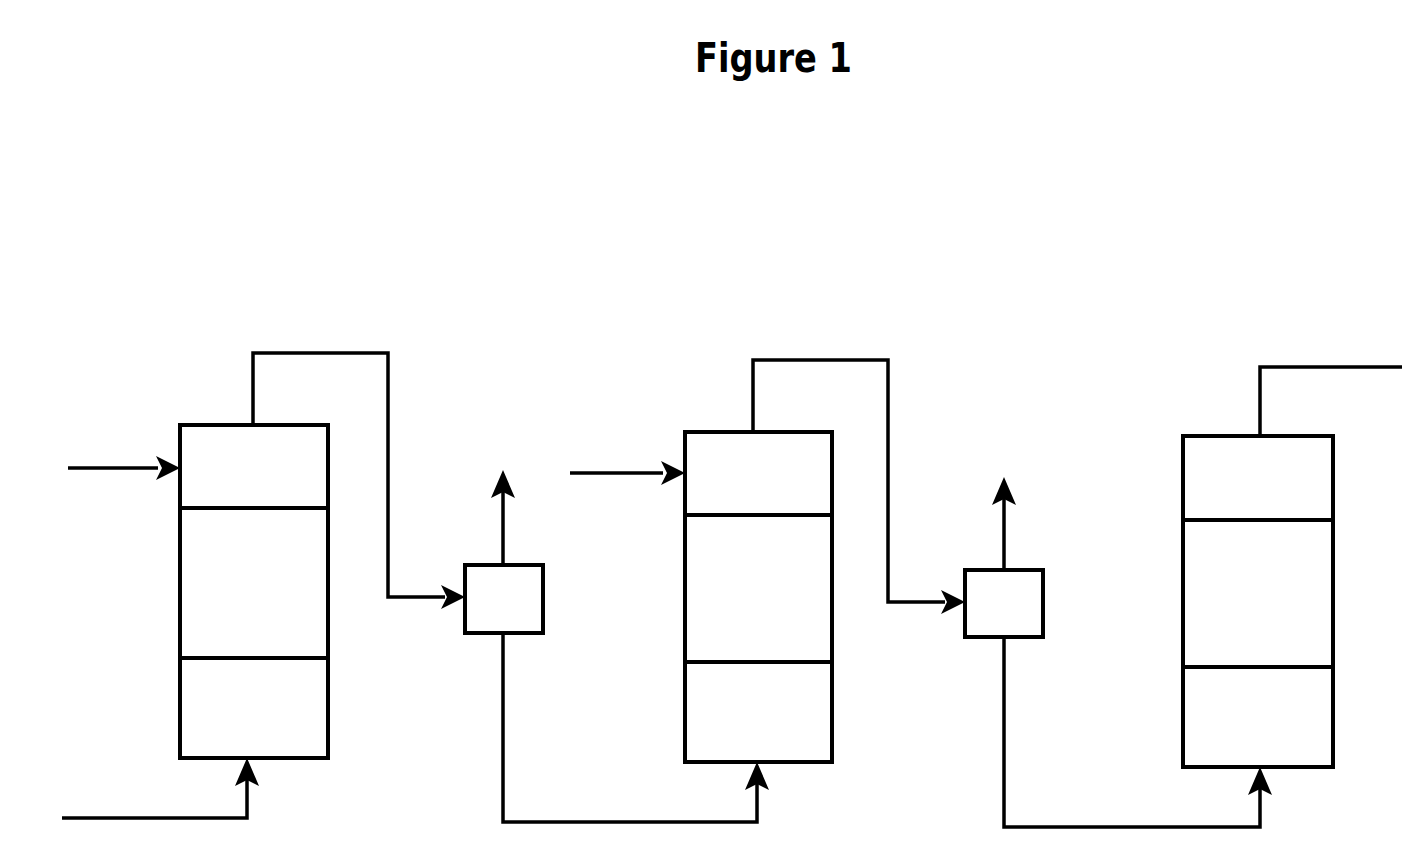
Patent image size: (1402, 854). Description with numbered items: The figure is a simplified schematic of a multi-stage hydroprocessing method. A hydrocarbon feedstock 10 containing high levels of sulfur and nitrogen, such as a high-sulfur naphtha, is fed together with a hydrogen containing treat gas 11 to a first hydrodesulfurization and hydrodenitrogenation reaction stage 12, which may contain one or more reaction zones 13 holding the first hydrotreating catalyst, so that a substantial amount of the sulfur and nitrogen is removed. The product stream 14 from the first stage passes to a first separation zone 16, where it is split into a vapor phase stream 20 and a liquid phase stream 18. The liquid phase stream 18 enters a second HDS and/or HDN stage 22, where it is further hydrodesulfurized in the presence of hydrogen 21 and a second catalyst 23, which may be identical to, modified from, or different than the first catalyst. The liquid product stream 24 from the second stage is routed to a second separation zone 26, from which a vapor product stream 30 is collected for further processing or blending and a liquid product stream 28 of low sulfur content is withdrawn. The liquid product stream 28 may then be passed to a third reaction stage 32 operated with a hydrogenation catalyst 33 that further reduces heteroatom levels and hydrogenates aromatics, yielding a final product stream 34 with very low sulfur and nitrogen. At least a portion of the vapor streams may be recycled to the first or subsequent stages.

The hydrocarbon feedstock 10 is at (85, 817).
The hydrogen containing treat gas 11 is at (128, 463).
The first hydrodesulfurization and hydrodenitrogenation reaction stage 12 is at (277, 423).
The reaction zone 13 is at (254, 591).
The product stream 14 is at (281, 352).
The first separation zone 16 is at (523, 565).
The liquid phase stream 18 is at (577, 820).
The vapor phase stream 20 is at (498, 513).
The hydrogen 21 is at (627, 457).
The second HDS and/or HDN stage 22 is at (775, 430).
The second catalyst 23 is at (758, 597).
The liquid product stream 24 is at (782, 358).
The second separation zone 26 is at (1045, 602).
The liquid product stream 28 is at (1097, 825).
The vapor product stream 30 is at (1006, 525).
The third reaction stage 32 is at (1288, 435).
The hydrogenation catalyst 33 is at (1258, 601).
The final product stream 34 is at (1295, 365).